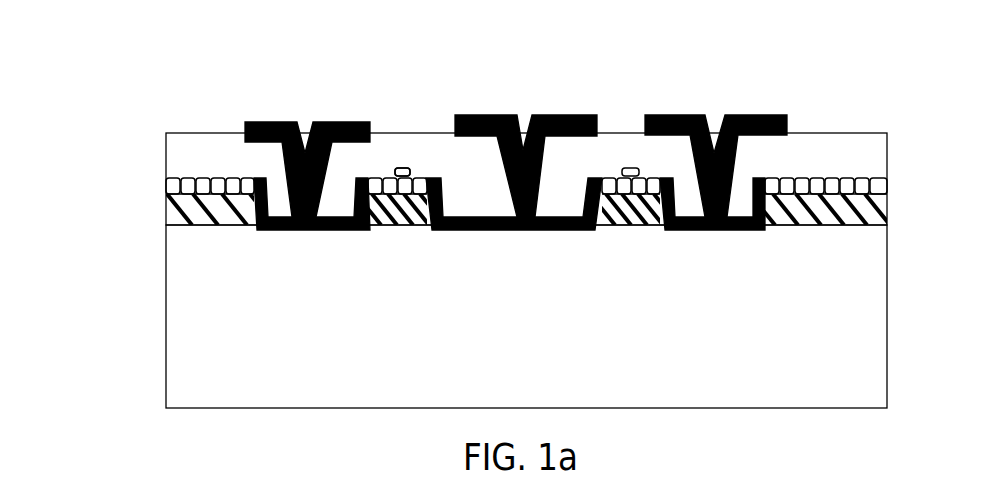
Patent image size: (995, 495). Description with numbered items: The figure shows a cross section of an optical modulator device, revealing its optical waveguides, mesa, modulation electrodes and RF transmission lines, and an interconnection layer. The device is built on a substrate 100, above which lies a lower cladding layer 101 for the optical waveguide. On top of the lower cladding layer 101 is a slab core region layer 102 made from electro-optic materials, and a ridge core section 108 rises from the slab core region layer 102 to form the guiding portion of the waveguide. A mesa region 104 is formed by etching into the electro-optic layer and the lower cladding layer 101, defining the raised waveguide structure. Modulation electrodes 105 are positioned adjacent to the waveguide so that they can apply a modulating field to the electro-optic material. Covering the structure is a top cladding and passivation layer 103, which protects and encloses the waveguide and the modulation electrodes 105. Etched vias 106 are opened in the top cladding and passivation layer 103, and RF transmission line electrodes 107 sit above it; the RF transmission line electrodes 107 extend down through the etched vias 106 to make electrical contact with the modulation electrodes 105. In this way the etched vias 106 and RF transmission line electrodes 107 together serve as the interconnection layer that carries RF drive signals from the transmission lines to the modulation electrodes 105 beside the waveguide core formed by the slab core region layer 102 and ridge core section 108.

The substrate 100 is at (192, 382).
The lower cladding layer 101 is at (195, 212).
The slab core region layer 102 is at (173, 185).
The top cladding and passivation layer 103 is at (185, 143).
The mesa region 104 is at (390, 173).
The modulation electrodes 105 is at (690, 214).
The etched vias 106 is at (303, 137).
The RF transmission line electrodes 107 is at (768, 112).
The ridge core section 108 is at (625, 170).